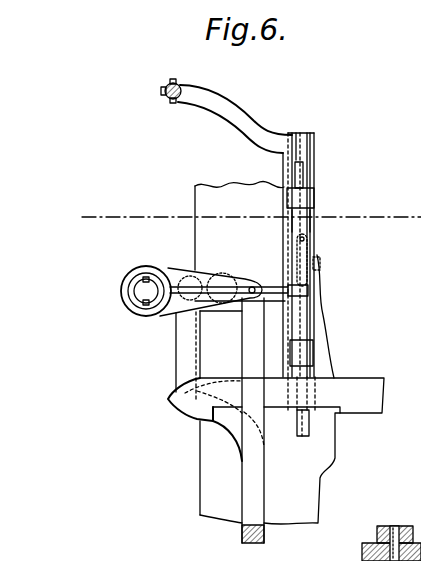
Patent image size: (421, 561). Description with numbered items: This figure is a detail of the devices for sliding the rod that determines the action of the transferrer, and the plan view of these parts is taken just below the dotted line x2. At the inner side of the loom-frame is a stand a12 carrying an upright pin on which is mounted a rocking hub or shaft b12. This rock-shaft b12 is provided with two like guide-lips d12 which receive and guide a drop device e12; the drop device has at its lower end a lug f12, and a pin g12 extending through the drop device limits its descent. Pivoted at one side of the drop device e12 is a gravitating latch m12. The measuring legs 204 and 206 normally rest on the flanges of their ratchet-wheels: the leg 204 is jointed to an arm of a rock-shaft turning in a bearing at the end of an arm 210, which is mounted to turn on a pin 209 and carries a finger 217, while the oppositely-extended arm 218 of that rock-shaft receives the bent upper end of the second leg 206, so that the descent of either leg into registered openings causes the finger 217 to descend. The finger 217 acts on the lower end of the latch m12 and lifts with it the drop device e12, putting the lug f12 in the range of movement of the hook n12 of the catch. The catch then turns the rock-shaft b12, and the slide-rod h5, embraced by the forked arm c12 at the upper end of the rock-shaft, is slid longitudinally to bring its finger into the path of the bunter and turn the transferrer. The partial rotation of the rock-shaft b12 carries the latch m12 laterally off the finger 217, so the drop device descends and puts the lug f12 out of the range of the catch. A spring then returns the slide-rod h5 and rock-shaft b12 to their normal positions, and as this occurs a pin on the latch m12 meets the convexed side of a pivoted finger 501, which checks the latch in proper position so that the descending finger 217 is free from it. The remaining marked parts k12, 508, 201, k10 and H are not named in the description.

The slide-rod h5 is at (168, 100).
The forked arm c12 is at (222, 115).
The rocking hub or shaft b12 is at (342, 288).
The drop device e12 is at (300, 178).
The guide-lips d12 is at (310, 198).
The sleeve k12 is at (303, 237).
The gravitating latch m12 is at (310, 258).
The finger 501 is at (320, 263).
The coupling 508 is at (300, 297).
The stand a12 is at (308, 352).
The lug f12 is at (302, 438).
The pin g12 is at (239, 225).
The dotted line x2 is at (249, 215).
The pin 209 is at (146, 291).
The arm 210 is at (175, 274).
The finger 217 is at (203, 290).
The link pin 201 is at (239, 277).
The arm 218 is at (160, 325).
The leg 206 is at (178, 365).
The leg 204 is at (246, 467).
The hook n12 is at (198, 417).
The base plate k10 is at (372, 385).
The housing H is at (312, 502).